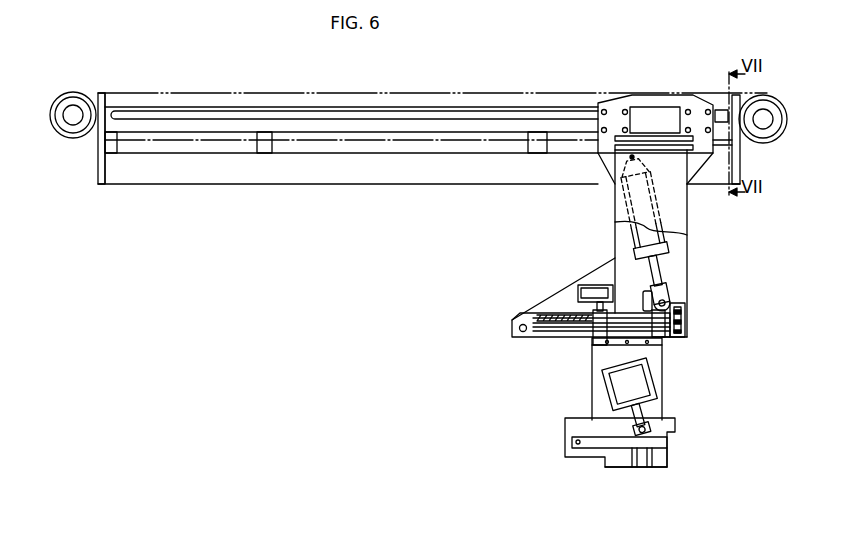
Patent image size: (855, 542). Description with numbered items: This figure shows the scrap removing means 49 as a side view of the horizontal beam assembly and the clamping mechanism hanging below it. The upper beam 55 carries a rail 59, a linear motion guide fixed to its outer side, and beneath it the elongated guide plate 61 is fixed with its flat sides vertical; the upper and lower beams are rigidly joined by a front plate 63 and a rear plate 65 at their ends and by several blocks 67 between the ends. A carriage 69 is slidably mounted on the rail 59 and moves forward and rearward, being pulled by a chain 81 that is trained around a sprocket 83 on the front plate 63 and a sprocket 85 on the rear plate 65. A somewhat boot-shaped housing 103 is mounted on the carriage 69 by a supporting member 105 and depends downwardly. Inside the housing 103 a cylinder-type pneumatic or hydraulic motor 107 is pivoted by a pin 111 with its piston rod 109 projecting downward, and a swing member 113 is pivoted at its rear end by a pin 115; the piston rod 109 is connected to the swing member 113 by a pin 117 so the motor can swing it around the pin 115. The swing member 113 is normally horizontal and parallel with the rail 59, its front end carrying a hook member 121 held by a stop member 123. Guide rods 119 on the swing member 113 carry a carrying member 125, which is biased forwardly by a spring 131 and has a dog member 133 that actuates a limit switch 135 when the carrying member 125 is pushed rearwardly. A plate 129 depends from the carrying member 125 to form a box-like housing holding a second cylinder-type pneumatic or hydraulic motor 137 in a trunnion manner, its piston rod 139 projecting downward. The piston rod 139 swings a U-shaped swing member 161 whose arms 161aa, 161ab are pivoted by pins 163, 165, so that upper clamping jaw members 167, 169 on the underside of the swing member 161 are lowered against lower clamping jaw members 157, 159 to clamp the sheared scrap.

The scrap removing means 49 is at (288, 80).
The upper beam 55 is at (354, 105).
The rail 59 is at (419, 111).
The guide plate 61 is at (347, 185).
The plate 63 is at (742, 157).
The plate 65 is at (98, 172).
The blocks 67 is at (107, 142).
The carriage 69 is at (668, 96).
The chain 81 is at (322, 92).
The sprocket 83 is at (766, 95).
The sprocket 85 is at (63, 93).
The housing 103 is at (688, 213).
The supporting member 105 is at (643, 108).
The pneumatic or hydraulic motor 107 is at (690, 233).
The piston rod 109 is at (663, 256).
The pin 111 is at (630, 158).
The swing member 113 is at (540, 335).
The pin 115 is at (512, 323).
The pin 117 is at (670, 292).
The guide rods 119 is at (598, 338).
The hook member 121 is at (688, 337).
The stop member 123 is at (686, 315).
The carrying member 125 is at (655, 347).
The plate 129 is at (662, 380).
The spring 131 is at (548, 313).
The dog member 133 is at (643, 305).
The limit switch 135 is at (592, 292).
The pneumatic or hydraulic motor 137 is at (610, 388).
The piston rod 139 is at (650, 412).
The lower clamping jaw member 157 is at (637, 468).
The lower clamping jaw member 159 is at (660, 467).
The swing member 161 is at (617, 450).
The arm 161aa is at (596, 446).
The arm 161ab is at (600, 476).
The pin 163 is at (578, 435).
The pin 165 is at (586, 442).
The upper clamping jaw member 167 is at (648, 468).
The upper clamping jaw member 169 is at (668, 456).